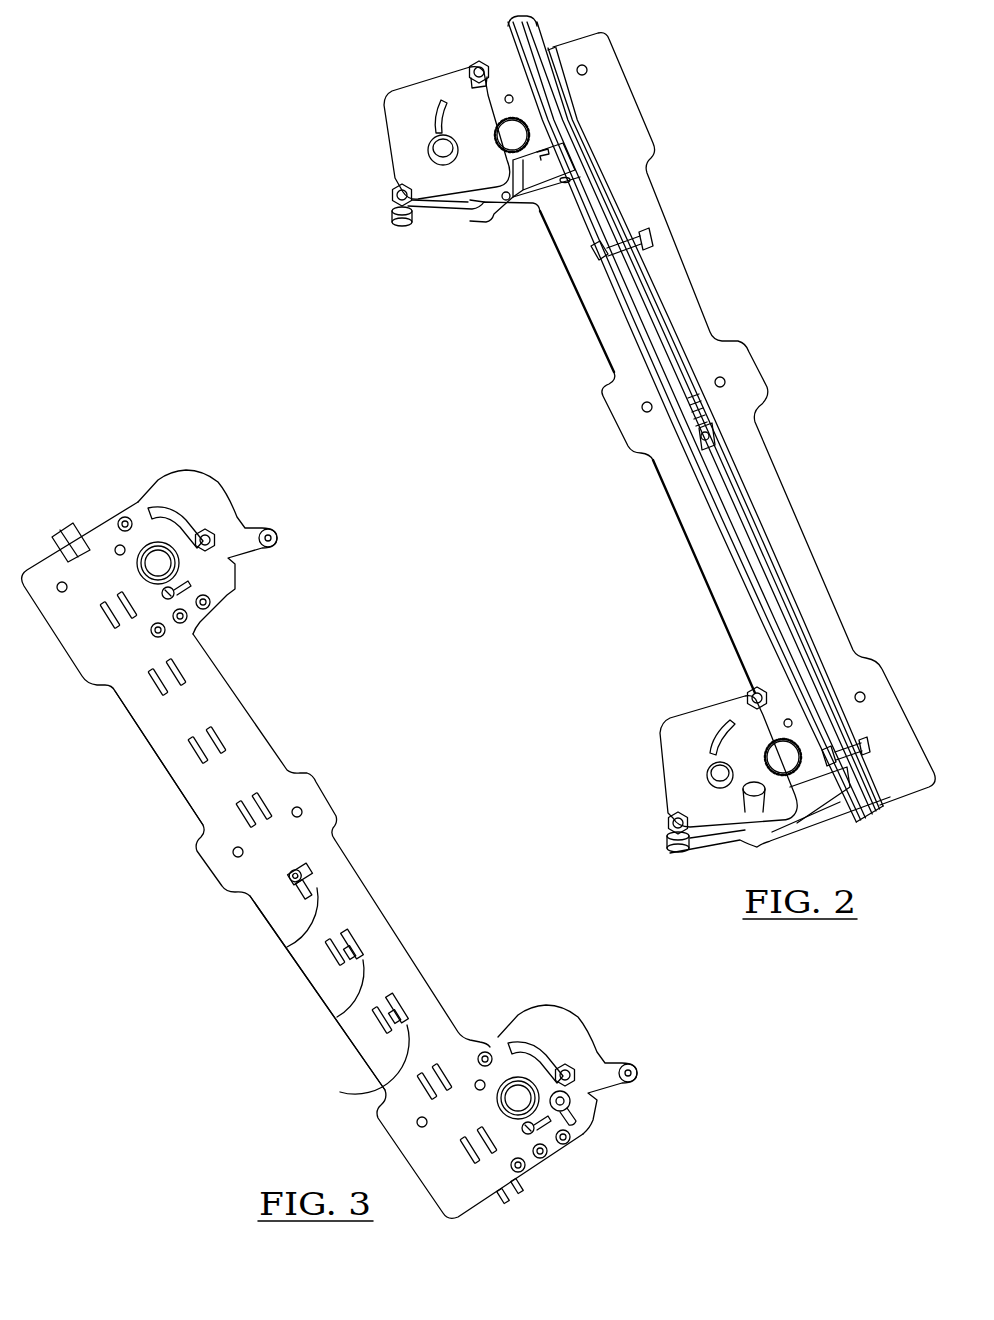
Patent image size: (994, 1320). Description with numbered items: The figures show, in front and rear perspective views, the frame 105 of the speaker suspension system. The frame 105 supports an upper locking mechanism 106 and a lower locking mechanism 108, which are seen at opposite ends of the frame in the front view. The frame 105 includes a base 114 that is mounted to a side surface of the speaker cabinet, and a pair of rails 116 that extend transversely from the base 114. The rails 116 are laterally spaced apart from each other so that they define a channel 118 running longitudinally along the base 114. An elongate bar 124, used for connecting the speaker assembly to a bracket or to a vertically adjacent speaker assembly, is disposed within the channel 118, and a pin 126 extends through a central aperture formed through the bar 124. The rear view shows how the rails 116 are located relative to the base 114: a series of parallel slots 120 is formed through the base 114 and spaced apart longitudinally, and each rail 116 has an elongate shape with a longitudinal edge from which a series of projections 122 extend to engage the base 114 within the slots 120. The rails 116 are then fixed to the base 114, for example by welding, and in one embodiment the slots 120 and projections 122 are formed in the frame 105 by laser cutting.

In FIG. 2, the frame 105 is at (680, 241).
In FIG. 3, the frame 105 is at (148, 768).
In FIG. 2, the upper locking mechanism 106 is at (405, 130).
In FIG. 2, the lower locking mechanism 108 is at (666, 788).
In FIG. 2, the base 114 is at (598, 306).
In FIG. 3, the base 114 is at (305, 782).
In FIG. 2, the rails 116 is at (760, 533).
In FIG. 2, the channel 118 is at (661, 316).
In FIG. 3, the slots 120 is at (318, 876).
In FIG. 3, the projections 122 is at (287, 947).
In FIG. 2, the bar 124 is at (695, 419).
In FIG. 2, the pin 126 is at (598, 255).